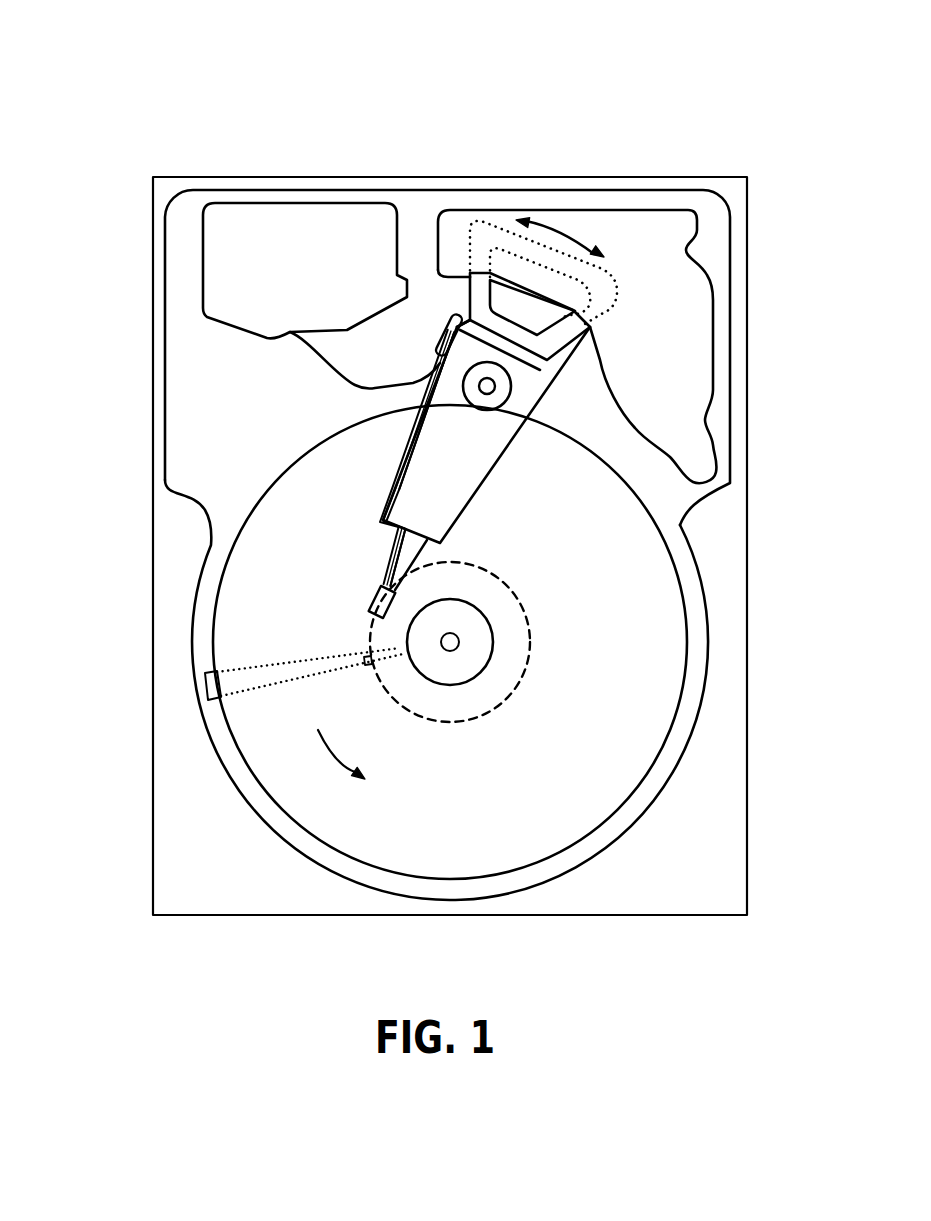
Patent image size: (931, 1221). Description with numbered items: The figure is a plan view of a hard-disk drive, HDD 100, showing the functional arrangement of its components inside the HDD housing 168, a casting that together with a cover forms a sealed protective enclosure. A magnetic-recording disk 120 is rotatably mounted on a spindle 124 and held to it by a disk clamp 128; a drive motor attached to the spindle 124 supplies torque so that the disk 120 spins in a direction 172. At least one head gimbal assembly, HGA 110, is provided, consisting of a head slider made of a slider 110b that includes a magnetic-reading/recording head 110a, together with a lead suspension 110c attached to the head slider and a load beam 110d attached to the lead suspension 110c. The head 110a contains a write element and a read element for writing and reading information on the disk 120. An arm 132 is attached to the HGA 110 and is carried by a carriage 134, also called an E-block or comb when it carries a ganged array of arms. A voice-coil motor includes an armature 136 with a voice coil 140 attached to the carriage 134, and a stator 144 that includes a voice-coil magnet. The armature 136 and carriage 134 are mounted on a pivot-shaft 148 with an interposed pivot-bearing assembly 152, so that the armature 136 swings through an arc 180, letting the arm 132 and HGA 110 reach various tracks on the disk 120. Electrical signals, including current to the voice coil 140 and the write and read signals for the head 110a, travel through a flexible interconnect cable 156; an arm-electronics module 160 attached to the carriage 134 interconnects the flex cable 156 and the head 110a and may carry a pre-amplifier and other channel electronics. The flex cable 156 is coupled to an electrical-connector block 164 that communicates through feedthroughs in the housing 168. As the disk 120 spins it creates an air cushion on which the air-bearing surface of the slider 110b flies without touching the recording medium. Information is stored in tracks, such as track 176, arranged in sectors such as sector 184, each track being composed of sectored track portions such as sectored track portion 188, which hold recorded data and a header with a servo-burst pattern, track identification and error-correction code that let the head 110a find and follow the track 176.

The HDD 100 is at (88, 66).
The head gimbal assembly 110 is at (82, 465).
The magnetic-reading/recording head 110a is at (374, 616).
The slider 110b is at (398, 586).
The lead suspension 110c is at (397, 553).
The load beam 110d is at (382, 527).
The magnetic-recording disk 120 is at (615, 600).
The spindle 124 is at (456, 642).
The disk clamp 128 is at (470, 665).
The arm 132 is at (440, 493).
The carriage 134 is at (503, 415).
The armature 136 is at (467, 303).
The voice coil 140 is at (482, 285).
The stator 144 is at (680, 295).
The pivot-shaft 148 is at (493, 384).
The pivot-bearing assembly 152 is at (497, 393).
The flexible interconnect cable 156 is at (317, 363).
The arm-electronics module 160 is at (440, 357).
The electrical-connector block 164 is at (228, 272).
The HDD housing 168 is at (728, 188).
The direction 172 is at (345, 765).
The track 176 is at (522, 604).
The arc 180 is at (557, 227).
The sector 184 is at (205, 675).
The sectored track portion 188 is at (365, 657).